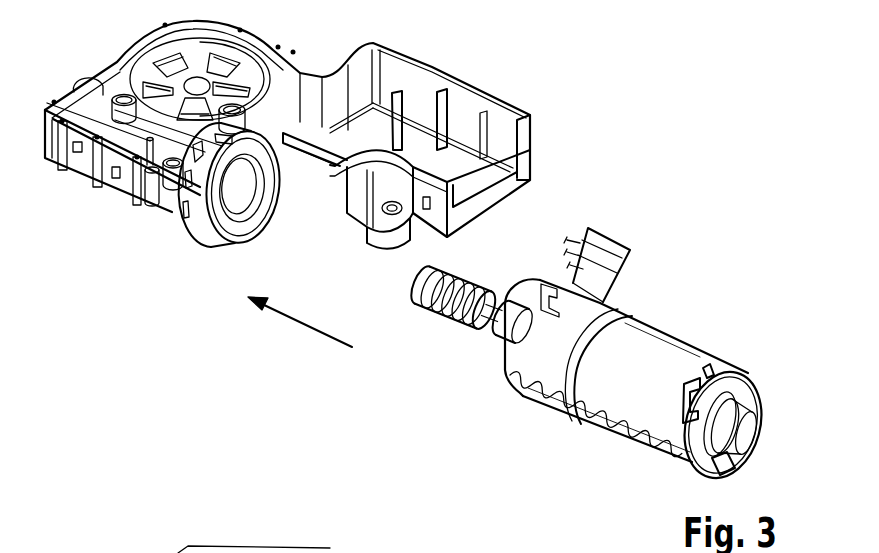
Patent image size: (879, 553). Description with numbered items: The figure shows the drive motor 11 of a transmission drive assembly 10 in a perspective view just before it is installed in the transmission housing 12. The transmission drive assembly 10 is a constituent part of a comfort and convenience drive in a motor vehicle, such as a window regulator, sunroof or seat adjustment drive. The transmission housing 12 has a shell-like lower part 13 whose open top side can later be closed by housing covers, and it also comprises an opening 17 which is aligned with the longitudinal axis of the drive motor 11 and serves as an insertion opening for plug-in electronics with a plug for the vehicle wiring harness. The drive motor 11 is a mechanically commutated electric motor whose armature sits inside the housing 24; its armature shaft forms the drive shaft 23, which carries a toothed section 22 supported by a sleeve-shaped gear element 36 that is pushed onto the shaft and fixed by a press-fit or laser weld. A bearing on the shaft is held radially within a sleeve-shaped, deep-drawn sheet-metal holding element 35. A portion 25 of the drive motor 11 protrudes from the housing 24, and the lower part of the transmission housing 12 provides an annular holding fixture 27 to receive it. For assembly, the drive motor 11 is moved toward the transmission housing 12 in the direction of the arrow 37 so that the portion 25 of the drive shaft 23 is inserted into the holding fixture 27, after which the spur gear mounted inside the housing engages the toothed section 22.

The transmission drive assembly 10 is at (418, 248).
The drive motor 11 is at (602, 357).
The transmission housing 12 is at (318, 147).
The lower part 13 is at (437, 129).
The opening 17 is at (487, 169).
The toothed section 22 is at (452, 296).
The drive shaft 23 is at (521, 327).
The housing 24 is at (700, 360).
The portion 25 is at (463, 343).
The annular holding fixture 27 is at (242, 200).
The holding element 35 is at (500, 307).
The gear element 36 is at (425, 303).
The arrow 37 is at (303, 322).